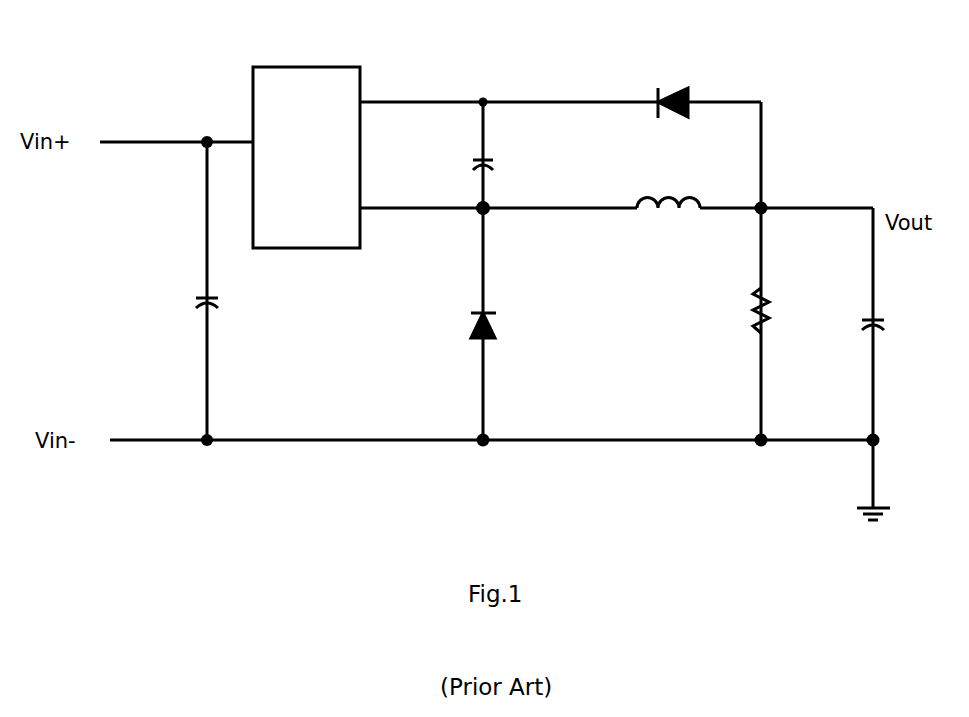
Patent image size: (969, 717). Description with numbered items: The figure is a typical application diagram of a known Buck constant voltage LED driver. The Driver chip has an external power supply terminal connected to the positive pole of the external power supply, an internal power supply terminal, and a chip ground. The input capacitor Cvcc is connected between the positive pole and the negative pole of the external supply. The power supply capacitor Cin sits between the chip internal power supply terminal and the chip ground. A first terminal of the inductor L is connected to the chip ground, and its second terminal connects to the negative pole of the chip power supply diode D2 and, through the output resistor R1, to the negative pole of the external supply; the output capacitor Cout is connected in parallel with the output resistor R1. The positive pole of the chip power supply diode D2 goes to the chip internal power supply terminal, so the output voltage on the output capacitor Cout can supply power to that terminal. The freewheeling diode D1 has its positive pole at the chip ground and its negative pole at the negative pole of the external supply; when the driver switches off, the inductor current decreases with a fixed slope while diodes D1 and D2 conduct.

The driver Driver is at (306, 143).
The power supply capacitor Cin is at (229, 316).
The input capacitor Cvcc is at (476, 159).
The freewheeling diode D1 is at (487, 332).
The chip power supply diode D2 is at (678, 105).
The inductor L is at (672, 211).
The output resistor R1 is at (746, 325).
The output capacitor Cout is at (843, 318).